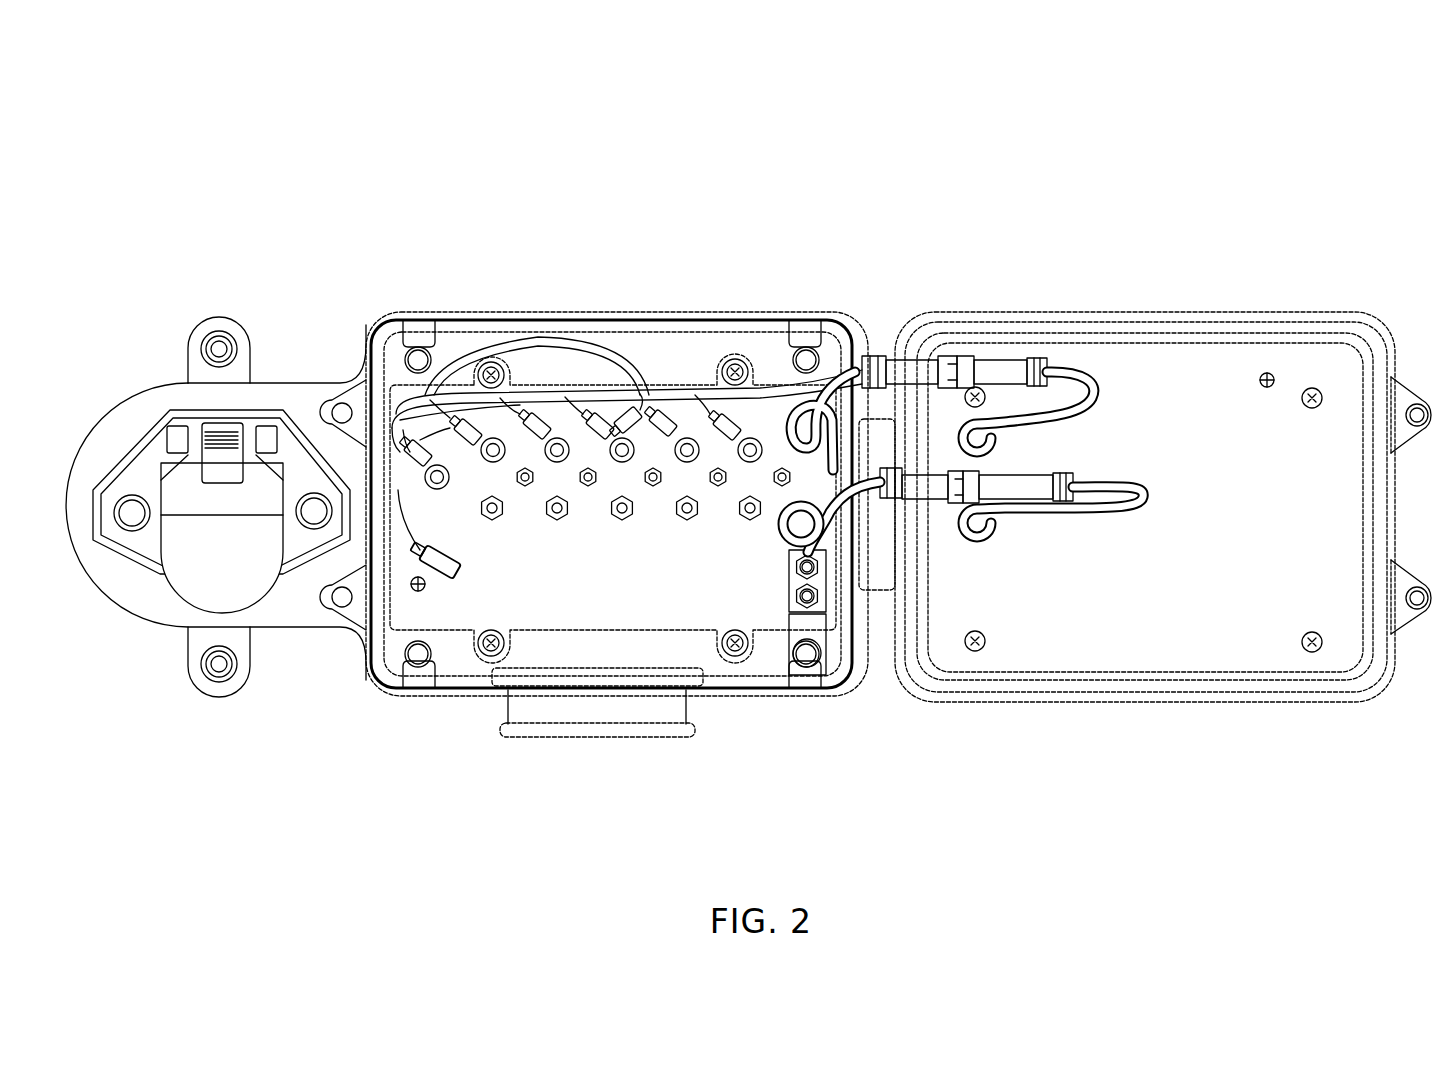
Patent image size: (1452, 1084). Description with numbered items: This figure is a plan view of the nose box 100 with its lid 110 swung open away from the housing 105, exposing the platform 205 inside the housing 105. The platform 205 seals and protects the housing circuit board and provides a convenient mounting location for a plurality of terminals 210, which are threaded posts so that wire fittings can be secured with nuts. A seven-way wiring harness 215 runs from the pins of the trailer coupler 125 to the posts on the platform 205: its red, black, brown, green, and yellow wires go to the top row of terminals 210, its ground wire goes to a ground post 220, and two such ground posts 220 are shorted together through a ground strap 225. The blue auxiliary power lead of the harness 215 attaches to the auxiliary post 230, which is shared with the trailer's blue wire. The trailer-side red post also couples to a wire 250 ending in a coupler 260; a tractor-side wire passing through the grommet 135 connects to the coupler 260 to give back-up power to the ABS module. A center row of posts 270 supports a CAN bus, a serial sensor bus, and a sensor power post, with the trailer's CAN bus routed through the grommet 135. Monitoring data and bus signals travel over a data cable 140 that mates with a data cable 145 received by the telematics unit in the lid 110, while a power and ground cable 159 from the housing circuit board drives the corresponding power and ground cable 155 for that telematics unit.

The nose box 100 is at (731, 120).
The housing 105 is at (712, 345).
The lid 110 is at (1283, 326).
The J-560 coupler 125 is at (150, 465).
The grommet 135 is at (625, 735).
The data cable 140 is at (845, 356).
The data cable 145 is at (1078, 416).
The power and ground cable 155 is at (1098, 512).
The power and ground cable 159 is at (878, 503).
The platform 205 is at (578, 612).
The terminals 210 is at (653, 486).
The 7-way wiring harness 215 is at (522, 386).
The ground post 220 is at (760, 556).
The ground strap 225 is at (820, 680).
The auxiliary post 230 is at (403, 480).
The wire 250 is at (598, 340).
The coupler 260 is at (452, 563).
The posts 270 is at (677, 505).